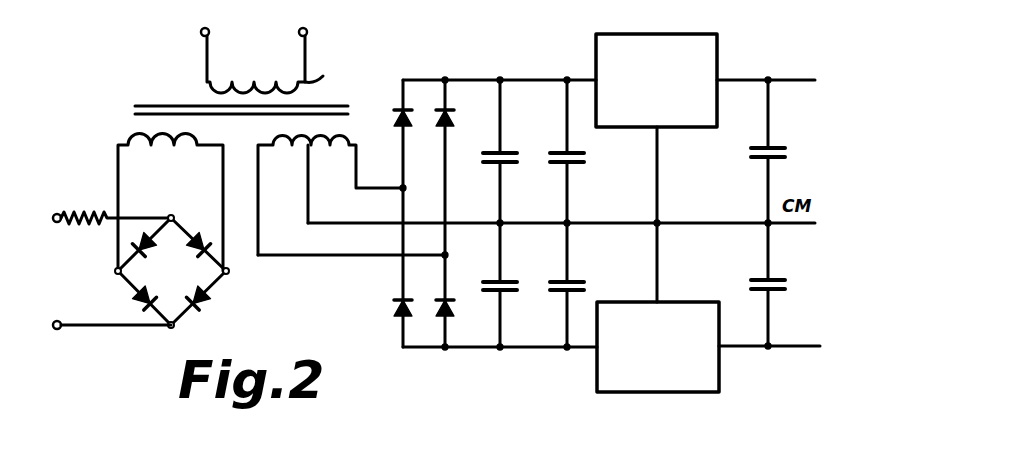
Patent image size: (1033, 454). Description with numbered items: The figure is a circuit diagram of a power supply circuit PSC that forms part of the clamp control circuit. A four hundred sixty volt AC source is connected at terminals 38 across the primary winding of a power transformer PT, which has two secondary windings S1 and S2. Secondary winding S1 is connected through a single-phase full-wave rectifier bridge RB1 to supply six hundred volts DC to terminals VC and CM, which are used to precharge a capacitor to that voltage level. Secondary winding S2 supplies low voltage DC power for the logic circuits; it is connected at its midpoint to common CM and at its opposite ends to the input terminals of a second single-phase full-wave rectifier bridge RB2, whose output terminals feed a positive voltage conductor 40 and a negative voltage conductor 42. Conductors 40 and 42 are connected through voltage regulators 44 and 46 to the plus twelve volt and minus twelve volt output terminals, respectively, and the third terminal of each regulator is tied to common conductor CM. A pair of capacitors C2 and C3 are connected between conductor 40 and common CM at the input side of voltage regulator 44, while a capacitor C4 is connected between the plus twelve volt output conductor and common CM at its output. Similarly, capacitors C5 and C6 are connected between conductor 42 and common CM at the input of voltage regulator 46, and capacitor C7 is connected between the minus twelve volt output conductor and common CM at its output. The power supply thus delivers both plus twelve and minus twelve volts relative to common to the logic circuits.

The terminals 38 is at (294, 40).
The positive voltage conductor 40 is at (512, 80).
The negative voltage conductor 42 is at (490, 348).
The voltage regulator 44 is at (596, 54).
The voltage regulator 46 is at (597, 372).
The power transformer PT is at (177, 104).
The secondary winding S1 is at (166, 142).
The secondary winding S2 is at (336, 137).
The single-phase full-wave rectifier bridge RB1 is at (136, 273).
The single-phase full-wave rectifier bridge RB2 is at (440, 183).
The power supply circuit PSC is at (455, 57).
The capacitor C2 is at (518, 160).
The capacitor C3 is at (586, 155).
The capacitor C4 is at (752, 153).
The capacitor C5 is at (528, 270).
The capacitor C6 is at (598, 270).
The capacitor C7 is at (752, 286).